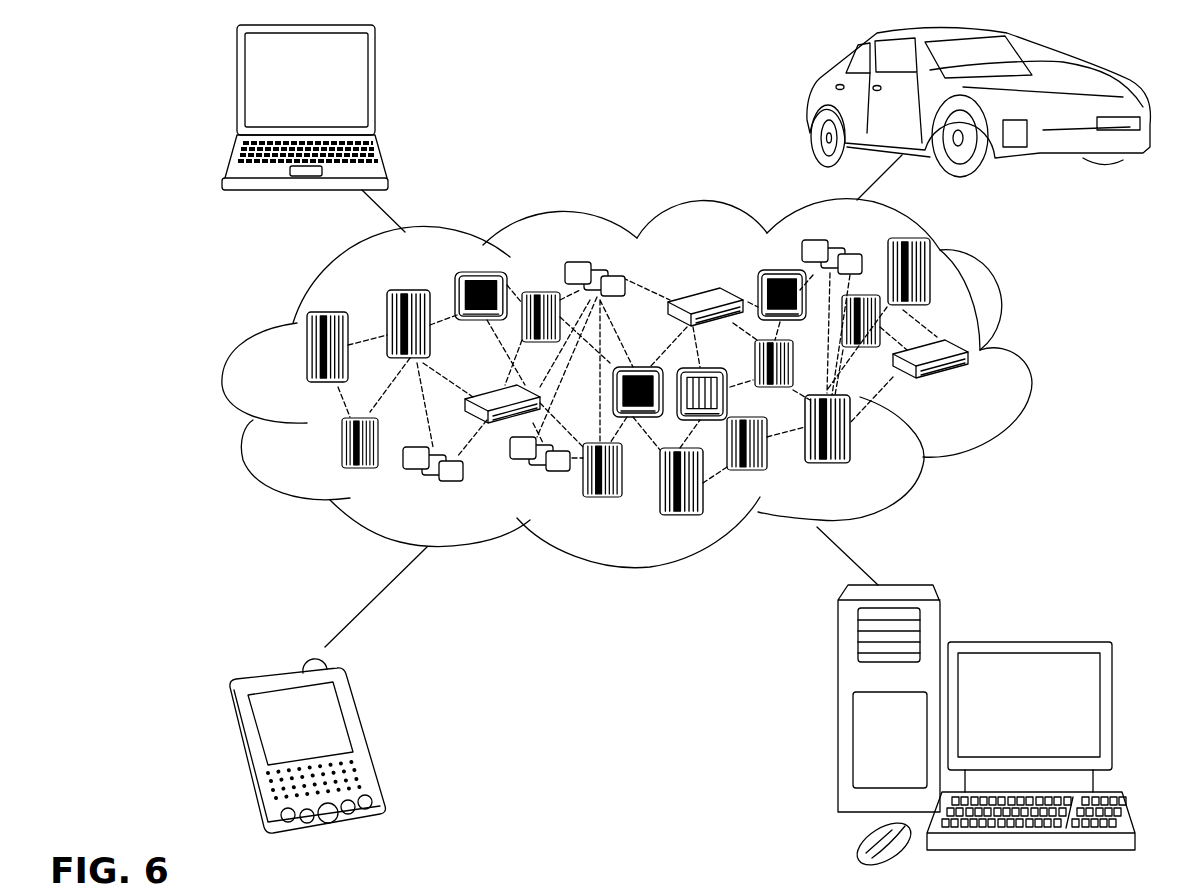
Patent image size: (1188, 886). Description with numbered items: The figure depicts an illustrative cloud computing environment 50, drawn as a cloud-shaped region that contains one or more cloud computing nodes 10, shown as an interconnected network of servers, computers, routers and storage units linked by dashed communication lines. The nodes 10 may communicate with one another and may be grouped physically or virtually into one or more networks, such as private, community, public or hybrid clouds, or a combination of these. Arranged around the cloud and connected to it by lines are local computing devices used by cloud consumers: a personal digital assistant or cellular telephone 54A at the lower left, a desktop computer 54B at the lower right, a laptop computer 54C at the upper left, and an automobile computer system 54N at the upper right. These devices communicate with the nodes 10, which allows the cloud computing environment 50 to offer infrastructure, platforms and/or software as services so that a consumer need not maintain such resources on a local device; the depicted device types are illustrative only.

The cloud computing node 10 is at (968, 387).
The cloud computing environment 50 is at (1028, 353).
The personal digital assistant (PDA) or cellular telephone 54A is at (367, 737).
The desktop computer 54B is at (1026, 642).
The laptop computer 54C is at (377, 89).
The automobile computer system 54N is at (810, 105).